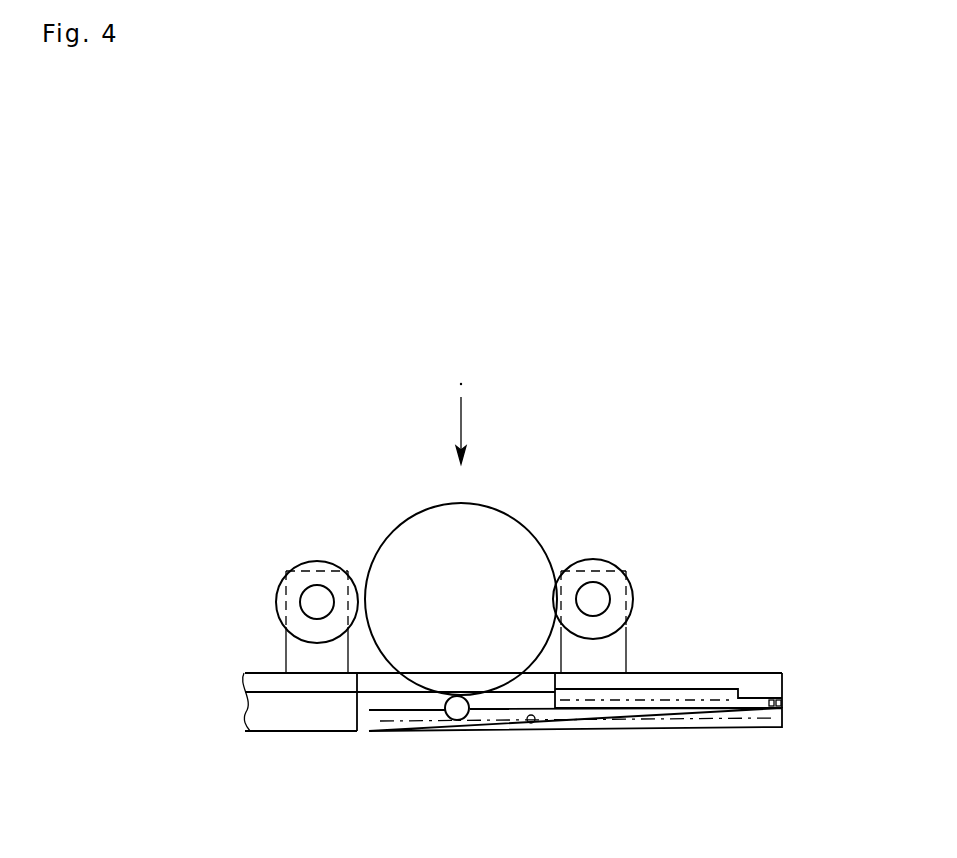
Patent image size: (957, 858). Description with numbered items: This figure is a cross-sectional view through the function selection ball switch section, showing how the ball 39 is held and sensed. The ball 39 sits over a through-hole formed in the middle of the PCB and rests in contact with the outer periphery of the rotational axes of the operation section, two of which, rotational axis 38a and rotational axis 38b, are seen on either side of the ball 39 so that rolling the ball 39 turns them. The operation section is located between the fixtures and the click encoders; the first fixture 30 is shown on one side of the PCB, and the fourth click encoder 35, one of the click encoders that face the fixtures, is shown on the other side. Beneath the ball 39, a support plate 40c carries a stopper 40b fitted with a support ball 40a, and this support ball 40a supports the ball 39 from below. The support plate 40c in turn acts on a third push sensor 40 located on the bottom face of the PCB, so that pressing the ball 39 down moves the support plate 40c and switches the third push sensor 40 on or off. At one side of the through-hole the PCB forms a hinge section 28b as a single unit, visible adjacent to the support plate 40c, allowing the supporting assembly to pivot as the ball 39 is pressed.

The ball 39 is at (486, 516).
The rotational axis 38a is at (328, 568).
The rotational axis 38b is at (593, 567).
The first fixture 30 is at (291, 655).
The fourth click encoder 35 is at (623, 648).
The third push sensor 40 is at (775, 692).
The support ball 40a is at (455, 714).
The stopper 40b is at (423, 747).
The support plate 40c is at (723, 722).
The hinge section 28b is at (532, 724).